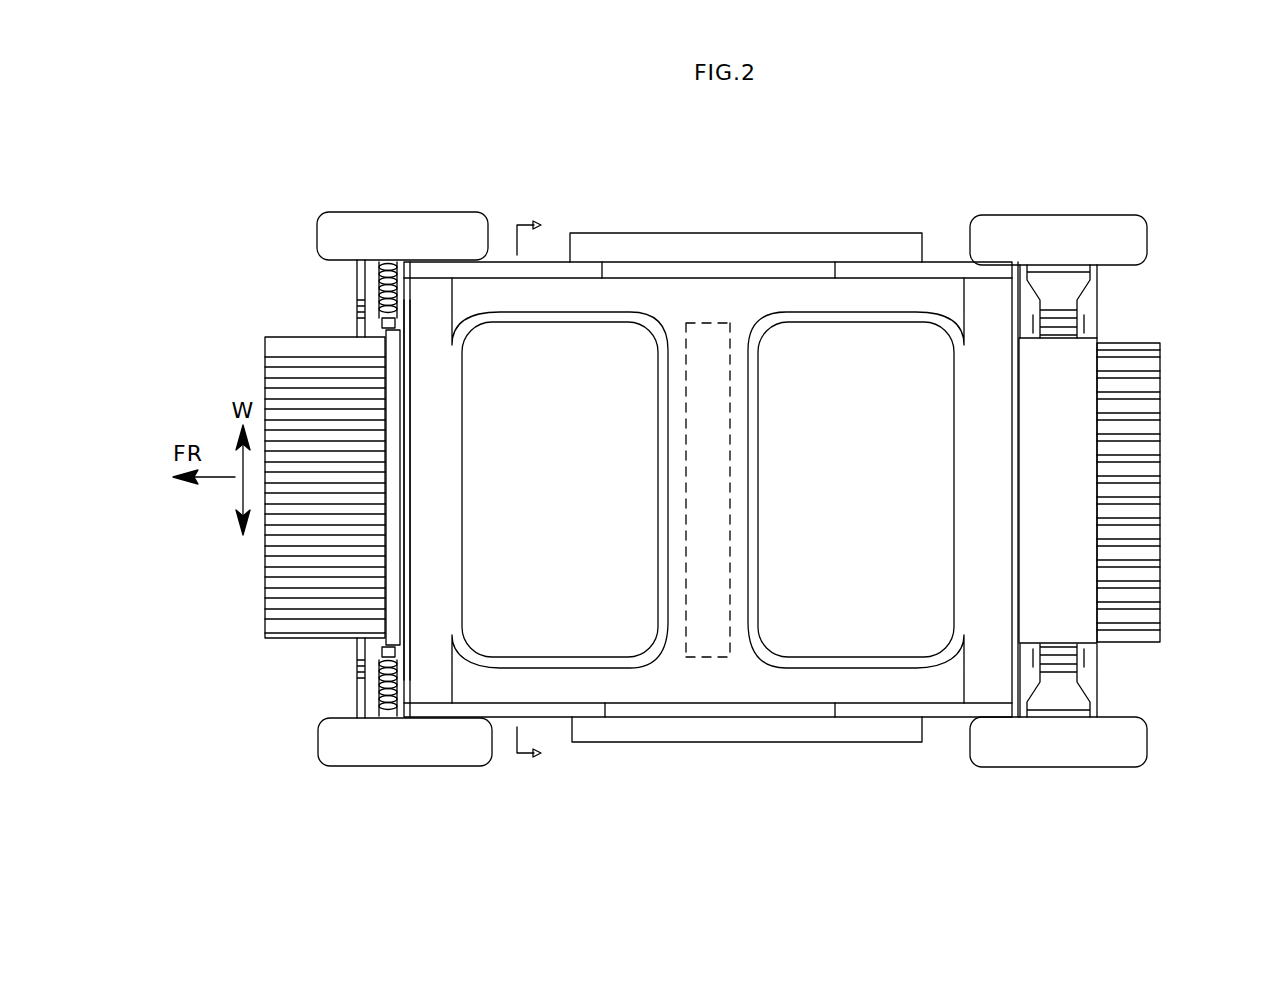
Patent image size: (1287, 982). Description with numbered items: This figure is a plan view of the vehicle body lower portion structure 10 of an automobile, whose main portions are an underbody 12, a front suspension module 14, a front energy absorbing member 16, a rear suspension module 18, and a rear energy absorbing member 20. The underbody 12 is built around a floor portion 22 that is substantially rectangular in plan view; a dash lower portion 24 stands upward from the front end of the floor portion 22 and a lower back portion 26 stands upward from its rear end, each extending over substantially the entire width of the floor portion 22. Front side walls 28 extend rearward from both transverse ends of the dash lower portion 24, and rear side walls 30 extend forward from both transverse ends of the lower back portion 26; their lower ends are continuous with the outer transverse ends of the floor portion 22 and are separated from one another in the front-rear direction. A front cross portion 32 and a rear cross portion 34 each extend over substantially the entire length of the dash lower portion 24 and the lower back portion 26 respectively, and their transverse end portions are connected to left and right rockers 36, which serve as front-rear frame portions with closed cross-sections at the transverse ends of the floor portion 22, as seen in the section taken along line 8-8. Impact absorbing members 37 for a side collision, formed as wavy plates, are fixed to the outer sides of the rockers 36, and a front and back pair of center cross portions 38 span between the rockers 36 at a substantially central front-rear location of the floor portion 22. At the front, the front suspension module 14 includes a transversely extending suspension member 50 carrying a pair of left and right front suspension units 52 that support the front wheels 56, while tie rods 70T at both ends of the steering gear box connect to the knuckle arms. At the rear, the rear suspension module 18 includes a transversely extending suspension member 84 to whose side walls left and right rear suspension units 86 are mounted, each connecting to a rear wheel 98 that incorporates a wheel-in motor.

The section line 8 is at (540, 489).
The vehicle body lower portion structure 10 is at (950, 176).
The underbody 12 is at (944, 730).
The front suspension module 14 is at (395, 574).
The front energy absorbing member 16 is at (258, 330).
The rear suspension module 18 is at (1088, 620).
The rear energy absorbing member 20 is at (1172, 556).
The floor portion 22 is at (790, 640).
The dash lower portion 24 is at (410, 540).
The lower back portion 26 is at (906, 515).
The front side walls 28 is at (585, 268).
The rear side walls 30 is at (873, 270).
The front cross portion 32 is at (440, 420).
The rear cross portion 34 is at (975, 510).
The rockers 36 is at (685, 293).
The impact absorbing members 37 is at (795, 246).
The center cross portions 38 is at (683, 428).
The suspension member 50 is at (395, 483).
The front suspension units 52 is at (374, 266).
The front wheels 56 is at (441, 226).
The tie rods 70T is at (358, 274).
The suspension member 84 is at (1083, 350).
The rear suspension units 86 is at (1108, 296).
The rear wheel 98 is at (1133, 228).